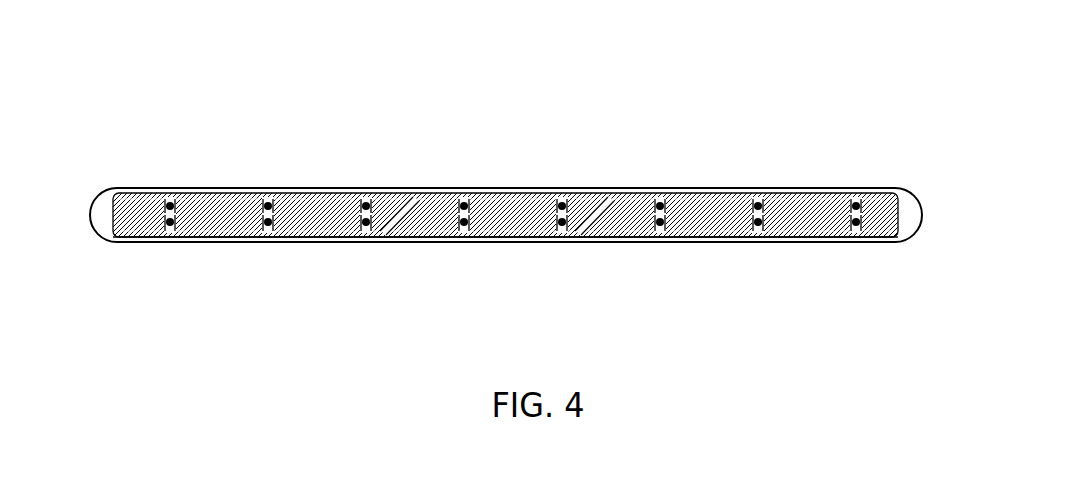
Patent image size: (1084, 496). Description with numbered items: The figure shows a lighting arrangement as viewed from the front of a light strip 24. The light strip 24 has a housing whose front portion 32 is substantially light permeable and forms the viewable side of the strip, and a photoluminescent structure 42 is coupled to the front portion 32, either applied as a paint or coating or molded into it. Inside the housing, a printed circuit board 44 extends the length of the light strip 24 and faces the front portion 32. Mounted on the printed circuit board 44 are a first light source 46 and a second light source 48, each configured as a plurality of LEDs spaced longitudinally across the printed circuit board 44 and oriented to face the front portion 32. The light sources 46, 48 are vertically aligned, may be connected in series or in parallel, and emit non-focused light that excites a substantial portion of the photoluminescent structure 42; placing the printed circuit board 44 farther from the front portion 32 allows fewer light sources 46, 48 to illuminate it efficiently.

The light strip 24 is at (506, 185).
The front portion 32 is at (731, 99).
The photoluminescent structure 42 is at (790, 212).
The printed circuit board 44 is at (221, 240).
The first light source 46 is at (177, 192).
The second light source 48 is at (166, 240).